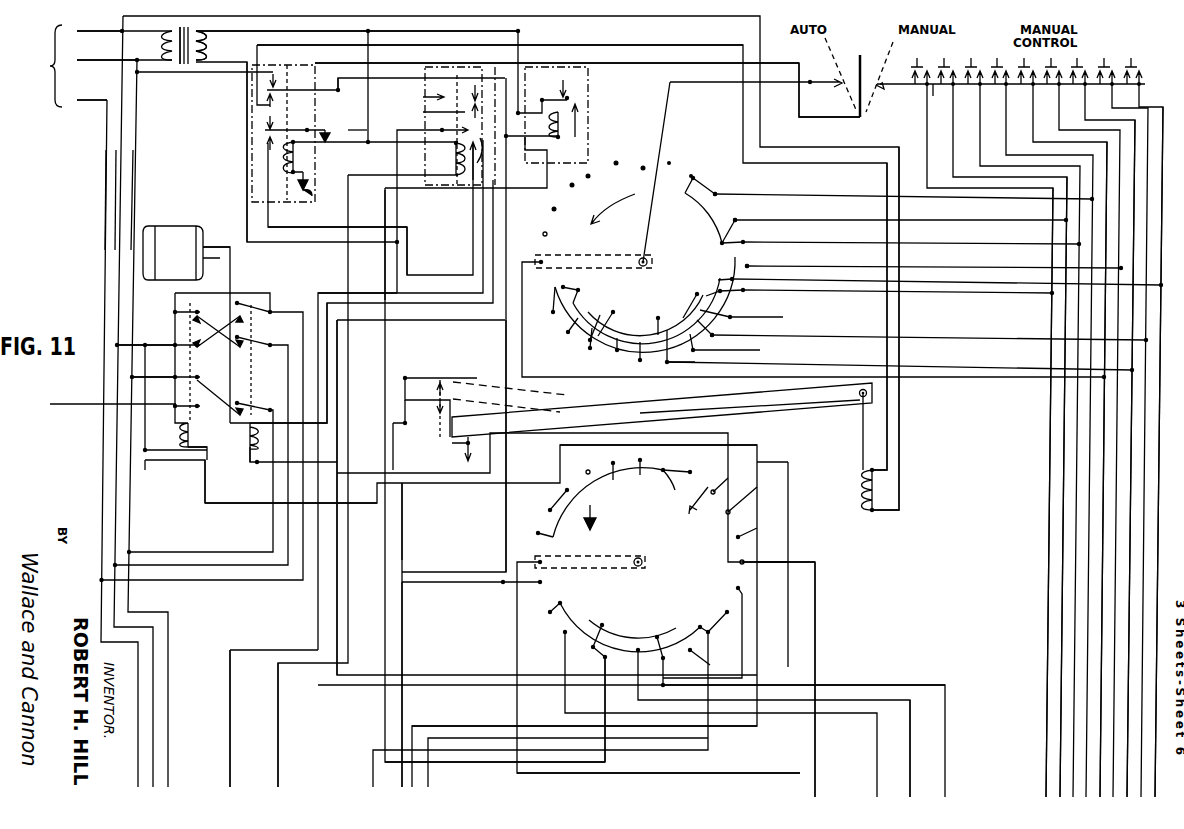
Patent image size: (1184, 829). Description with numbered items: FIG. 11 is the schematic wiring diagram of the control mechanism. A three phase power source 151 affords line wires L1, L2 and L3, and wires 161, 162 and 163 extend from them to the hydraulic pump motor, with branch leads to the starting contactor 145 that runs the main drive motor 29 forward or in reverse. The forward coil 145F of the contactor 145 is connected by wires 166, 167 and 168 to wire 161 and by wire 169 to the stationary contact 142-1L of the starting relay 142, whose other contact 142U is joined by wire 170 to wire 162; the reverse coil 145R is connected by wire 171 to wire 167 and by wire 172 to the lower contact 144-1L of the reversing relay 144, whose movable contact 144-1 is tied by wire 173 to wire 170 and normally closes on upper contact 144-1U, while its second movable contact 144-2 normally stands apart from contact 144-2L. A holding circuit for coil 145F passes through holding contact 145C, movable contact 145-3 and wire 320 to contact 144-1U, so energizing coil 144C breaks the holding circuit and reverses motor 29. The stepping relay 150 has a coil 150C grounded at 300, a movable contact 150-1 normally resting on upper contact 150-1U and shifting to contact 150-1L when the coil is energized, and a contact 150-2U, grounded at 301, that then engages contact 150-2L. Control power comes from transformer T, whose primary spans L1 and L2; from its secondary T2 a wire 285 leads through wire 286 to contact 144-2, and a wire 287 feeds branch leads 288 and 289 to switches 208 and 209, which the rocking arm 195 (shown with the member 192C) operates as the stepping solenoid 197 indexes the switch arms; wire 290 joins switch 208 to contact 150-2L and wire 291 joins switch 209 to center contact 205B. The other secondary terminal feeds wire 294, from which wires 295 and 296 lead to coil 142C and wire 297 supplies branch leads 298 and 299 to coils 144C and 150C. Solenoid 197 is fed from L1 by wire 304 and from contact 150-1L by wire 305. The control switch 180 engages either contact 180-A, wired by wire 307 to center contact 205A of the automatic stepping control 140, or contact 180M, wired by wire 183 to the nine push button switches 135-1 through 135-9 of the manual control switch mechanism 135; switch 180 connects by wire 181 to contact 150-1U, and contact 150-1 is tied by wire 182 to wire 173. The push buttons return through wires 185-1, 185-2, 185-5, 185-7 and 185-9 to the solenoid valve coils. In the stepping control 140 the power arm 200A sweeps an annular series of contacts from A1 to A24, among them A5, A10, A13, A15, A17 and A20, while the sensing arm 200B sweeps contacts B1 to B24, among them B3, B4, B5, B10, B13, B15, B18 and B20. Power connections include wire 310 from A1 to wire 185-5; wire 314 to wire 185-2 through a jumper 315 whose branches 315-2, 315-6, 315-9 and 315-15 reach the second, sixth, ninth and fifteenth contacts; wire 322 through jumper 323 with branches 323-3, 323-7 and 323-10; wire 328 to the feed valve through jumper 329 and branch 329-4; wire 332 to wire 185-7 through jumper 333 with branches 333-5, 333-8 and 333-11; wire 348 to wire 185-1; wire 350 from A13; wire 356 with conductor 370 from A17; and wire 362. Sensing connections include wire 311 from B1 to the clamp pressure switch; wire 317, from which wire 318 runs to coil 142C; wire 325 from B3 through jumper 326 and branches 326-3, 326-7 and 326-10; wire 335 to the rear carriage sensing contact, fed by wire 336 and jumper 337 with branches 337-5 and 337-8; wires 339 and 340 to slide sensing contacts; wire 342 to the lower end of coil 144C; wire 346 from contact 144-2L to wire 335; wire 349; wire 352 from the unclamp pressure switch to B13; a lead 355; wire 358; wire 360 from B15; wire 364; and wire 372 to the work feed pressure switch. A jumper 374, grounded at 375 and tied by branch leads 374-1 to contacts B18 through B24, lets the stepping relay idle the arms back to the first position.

The three phase power source 151 is at (50, 50).
The line wire L1 is at (78, 25).
The line wire L2 is at (78, 54).
The line wire L3 is at (78, 94).
The transformer T is at (176, 66).
The transformer secondary T2 is at (204, 45).
The wire 170 is at (188, 67).
The wire 294 is at (498, 34).
The wire 297 is at (372, 45).
The wire 295 is at (528, 58).
The wire 285 is at (245, 129).
The wire 161 is at (117, 200).
The wire 162 is at (133, 233).
The wire 163 is at (106, 272).
The stepping relay 150 is at (250, 146).
The upper stationary contact 150-1U is at (268, 80).
The movable contact 150-1 is at (280, 78).
The lower contact 150-1L is at (266, 105).
The movable contact 150-2U is at (281, 128).
The lower stationary contact 150-2L is at (266, 150).
The operating coil 150C is at (300, 160).
The ground 300 is at (318, 192).
The ground 301 is at (330, 137).
The wire 182 is at (338, 95).
The wire 173 is at (356, 108).
The branch lead 299 is at (360, 150).
The branch lead 298 is at (395, 160).
The reversing relay 144 is at (447, 135).
The upper contact 144-1U is at (457, 92).
The movable contact 144-1 is at (414, 92).
The lower contact 144-1L is at (429, 110).
The second movable contact 144-2 is at (446, 126).
The operating coil 144C is at (443, 158).
The lower contact 144-2L is at (456, 170).
The starting relay 142 is at (592, 90).
The relay contact 142U is at (559, 91).
The stationary contact 142-1L is at (582, 113).
The wire 296 is at (533, 118).
The operating coil 142C is at (572, 135).
The wire 286 is at (397, 215).
The wire 290 is at (408, 280).
The wire 172 is at (437, 322).
The wire 287 is at (410, 362).
The branch lead 288 is at (416, 414).
The branch lead 289 is at (402, 432).
The switch 208 is at (437, 392).
The switch 209 is at (452, 452).
The wire 342 is at (346, 262).
The wire 346 is at (320, 304).
The wire 320 is at (338, 433).
The wire 318 is at (504, 520).
The wire 291 is at (404, 515).
The wire 317 is at (404, 630).
The wire 311 is at (516, 618).
The wire 358 is at (277, 722).
The wire 364 is at (229, 757).
The wire 339 is at (372, 758).
The wire 340 is at (385, 770).
The wire 360 is at (420, 726).
The starting contactor 145 is at (170, 474).
The wire 166 is at (140, 345).
The wire 167 is at (145, 386).
The movable contact 145-3 is at (92, 404).
The wire 168 is at (175, 440).
The holding contact 145C is at (234, 443).
The forward operating coil 145F is at (213, 453).
The reverse operating coil 145R is at (250, 462).
The wire 171 is at (150, 475).
The wire 169 is at (226, 502).
The main drive motor 29 is at (166, 238).
The control switch 180 is at (862, 43).
The automatic contact 180-A is at (835, 88).
The manual contact 180M is at (884, 90).
The wire 181 is at (798, 110).
The manual control switch mechanism 135 is at (920, 105).
The wire 183 is at (939, 97).
The push button switch 135-1 is at (922, 58).
The push button switch 135-9 is at (1142, 64).
The wire 362 is at (812, 192).
The wire 314 is at (1002, 222).
The wire 356 is at (850, 240).
The wire 350 is at (940, 264).
The wire 328 is at (1024, 285).
The wire 348 is at (982, 290).
The wire 322 is at (922, 336).
The wire 332 is at (930, 368).
The wire 310 is at (1012, 382).
The wire 305 is at (888, 415).
The wire 304 is at (900, 440).
The stepping solenoid 197 is at (858, 487).
The wire 307 is at (668, 120).
The movable switch arm 200A is at (603, 250).
The center contact 205A is at (650, 262).
The contact A1 is at (552, 262).
The conductor 370 is at (712, 208).
The contact A17 is at (700, 178).
The branch 315-15 is at (730, 218).
The contact A15 is at (720, 238).
The contact A13 is at (743, 262).
The jumper wire 329 is at (720, 286).
The jumper wire 315 is at (745, 304).
The branch lead 333-11 is at (777, 318).
The branch 323-10 is at (718, 331).
The branch 315-9 is at (715, 345).
The branch lead 333-8 is at (688, 362).
The contact A10 is at (679, 303).
The jumper 333 is at (634, 304).
The contact A5 is at (607, 312).
The branch 329-4 is at (588, 298).
The jumper 323 is at (576, 294).
The branch 315-2 is at (548, 316).
The branch 323-3 is at (567, 334).
The branch lead 333-5 is at (588, 350).
The branch 315-6 is at (616, 352).
The branch 323-7 is at (637, 365).
The contact A20 is at (608, 170).
The contact A24 is at (546, 234).
The lever bar 192C is at (643, 405).
The rocking arm 195 is at (780, 406).
The movable switch arm 200B is at (605, 552).
The central contact 205B is at (646, 562).
The contact B1 is at (554, 562).
The contact B20 is at (619, 485).
The jumper 374 is at (634, 480).
The branch leads 374-1 is at (665, 456).
The contact B18 is at (704, 486).
The ground 375 is at (595, 520).
The contact B24 is at (540, 540).
The contact B15 is at (726, 513).
The main sequence control 140 is at (723, 506).
The contact B13 is at (744, 564).
The branch connection 326-3 is at (560, 588).
The contact B3 is at (541, 621).
The contact B4 is at (704, 713).
The contact B5 is at (592, 625).
The jumper 337 is at (614, 602).
The branch lead 337-5 is at (585, 660).
The branch connection 326-7 is at (632, 660).
The jumper wire 326 is at (670, 632).
The wire 336 is at (665, 667).
The contact B10 is at (690, 616).
The branch lead 337-8 is at (707, 654).
The branch connection 326-10 is at (720, 598).
The conductor 355 is at (730, 445).
The wire 349 is at (720, 742).
The wire 335 is at (870, 690).
The wire 352 is at (818, 622).
The wire 372 is at (790, 665).
The wire 325 is at (908, 778).
The wire 185-1 is at (1049, 515).
The wire 185-2 is at (1063, 538).
The wire 185-5 is at (1102, 583).
The wire 185-7 is at (1129, 608).
The wire 185-9 is at (1157, 632).